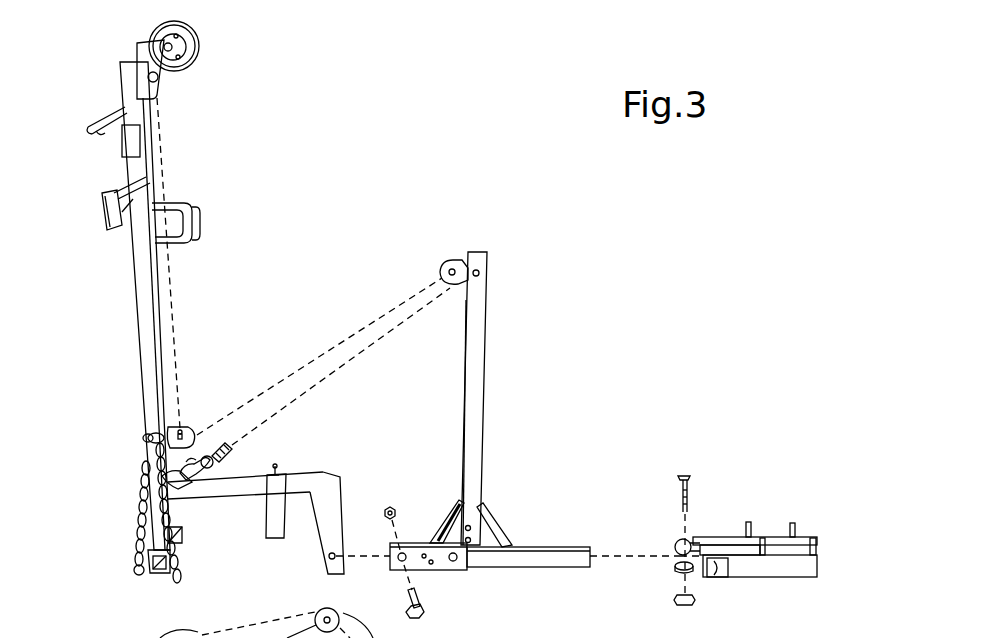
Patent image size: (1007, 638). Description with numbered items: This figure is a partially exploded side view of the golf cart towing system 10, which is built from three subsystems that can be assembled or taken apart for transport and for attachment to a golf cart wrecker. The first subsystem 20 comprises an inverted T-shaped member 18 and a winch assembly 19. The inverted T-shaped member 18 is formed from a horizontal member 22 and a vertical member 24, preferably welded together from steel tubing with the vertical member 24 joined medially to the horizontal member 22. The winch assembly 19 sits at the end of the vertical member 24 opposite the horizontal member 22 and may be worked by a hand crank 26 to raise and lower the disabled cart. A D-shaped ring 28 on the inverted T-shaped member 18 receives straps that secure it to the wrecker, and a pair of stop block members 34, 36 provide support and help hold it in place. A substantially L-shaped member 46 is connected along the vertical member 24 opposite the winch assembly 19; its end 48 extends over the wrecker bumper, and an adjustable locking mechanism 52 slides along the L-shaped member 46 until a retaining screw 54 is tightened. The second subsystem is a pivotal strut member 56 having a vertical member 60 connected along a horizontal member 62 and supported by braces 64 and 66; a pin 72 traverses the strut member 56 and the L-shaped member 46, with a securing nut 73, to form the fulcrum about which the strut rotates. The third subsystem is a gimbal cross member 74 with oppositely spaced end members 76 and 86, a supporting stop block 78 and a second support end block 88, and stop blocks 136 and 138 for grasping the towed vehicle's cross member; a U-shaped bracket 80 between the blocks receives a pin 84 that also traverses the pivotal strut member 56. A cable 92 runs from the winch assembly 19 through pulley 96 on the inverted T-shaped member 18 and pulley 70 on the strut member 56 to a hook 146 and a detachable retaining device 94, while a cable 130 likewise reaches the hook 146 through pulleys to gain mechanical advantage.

The towing system 10 is at (514, 86).
The inverted T-shaped member 18 is at (124, 384).
The winch assembly 19 is at (197, 27).
The first subsystem 20 is at (290, 114).
The horizontal member 22 is at (160, 577).
The vertical member 24 is at (143, 314).
The hand crank 26 is at (91, 128).
The D-shaped ring 28 is at (200, 222).
The stop block member 34 is at (110, 226).
The stop block member 36 is at (123, 192).
The L-shaped member 46 is at (240, 500).
The end of L-shaped member 48 is at (328, 478).
The locking mechanism 52 is at (287, 522).
The retaining screw 54 is at (277, 472).
The pivotal strut member 56 is at (502, 392).
The vertical member 60 is at (478, 432).
The horizontal member 62 is at (587, 567).
The brace 64 is at (487, 528).
The brace 66 is at (448, 528).
The pulley 70 is at (450, 261).
The pin 72 is at (423, 613).
The securing nut 73 is at (384, 514).
The gimbal cross member 74 is at (791, 476).
The end member 76 is at (797, 546).
The supporting stop block 78 is at (705, 538).
The U-shaped bracket 80 is at (680, 547).
The pin 84 is at (686, 476).
The end member 86 is at (813, 577).
The second support end block 88 is at (757, 577).
The cable 92 is at (160, 137).
The detachable retaining device 94 is at (202, 478).
The pulley 96 is at (187, 427).
The cable 130 is at (257, 625).
The stop block 136 is at (817, 547).
The stop block 138 is at (797, 523).
The hook 146 is at (176, 492).